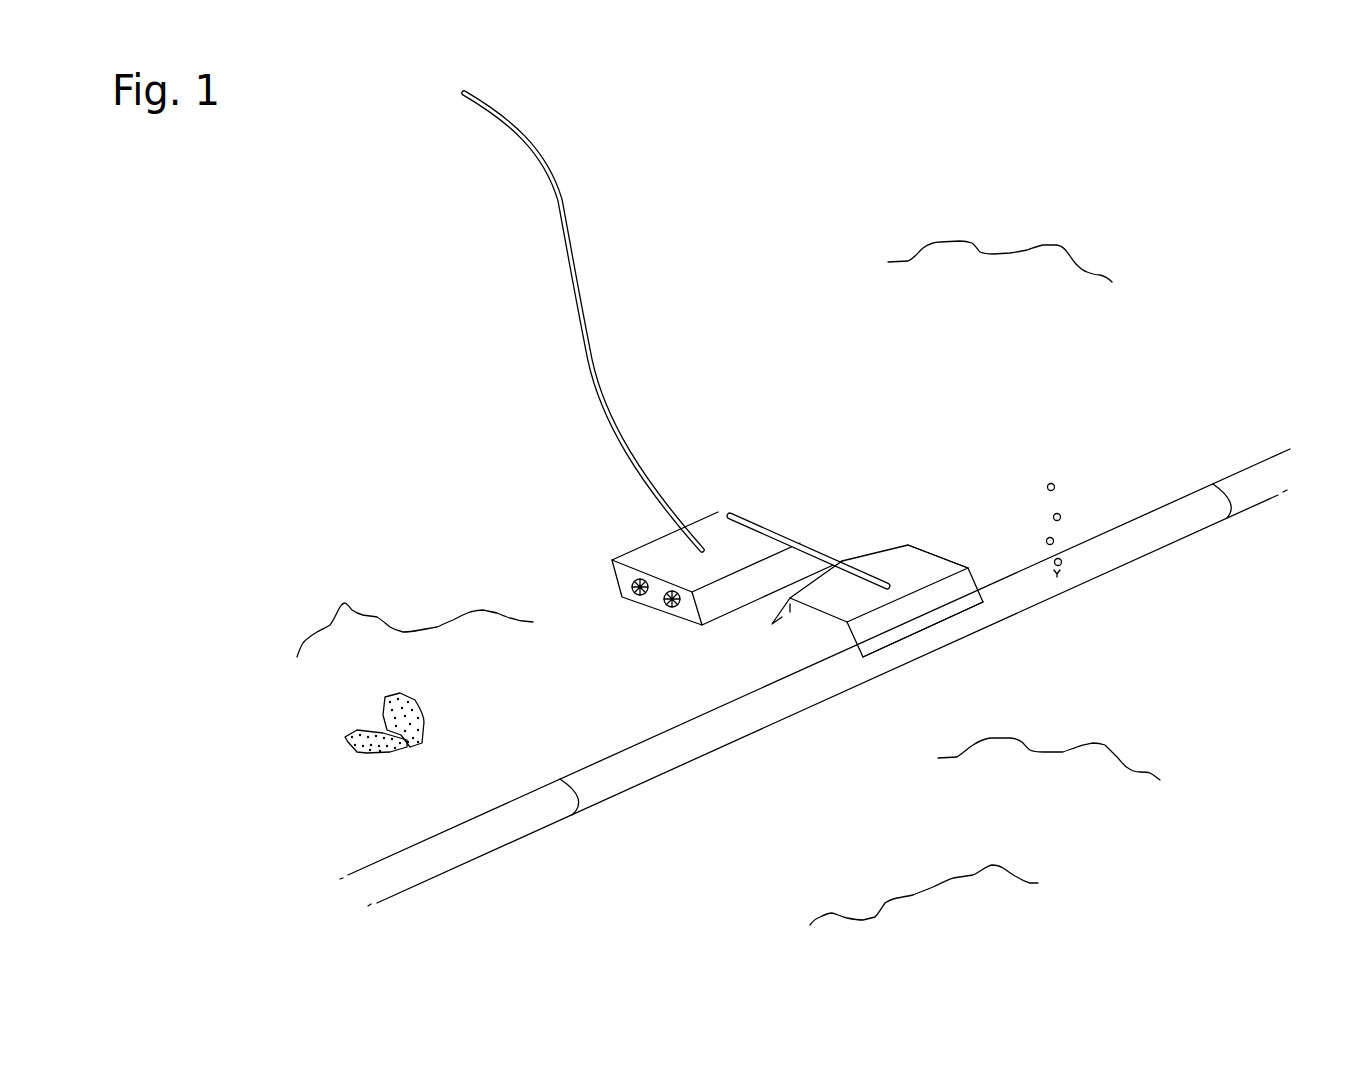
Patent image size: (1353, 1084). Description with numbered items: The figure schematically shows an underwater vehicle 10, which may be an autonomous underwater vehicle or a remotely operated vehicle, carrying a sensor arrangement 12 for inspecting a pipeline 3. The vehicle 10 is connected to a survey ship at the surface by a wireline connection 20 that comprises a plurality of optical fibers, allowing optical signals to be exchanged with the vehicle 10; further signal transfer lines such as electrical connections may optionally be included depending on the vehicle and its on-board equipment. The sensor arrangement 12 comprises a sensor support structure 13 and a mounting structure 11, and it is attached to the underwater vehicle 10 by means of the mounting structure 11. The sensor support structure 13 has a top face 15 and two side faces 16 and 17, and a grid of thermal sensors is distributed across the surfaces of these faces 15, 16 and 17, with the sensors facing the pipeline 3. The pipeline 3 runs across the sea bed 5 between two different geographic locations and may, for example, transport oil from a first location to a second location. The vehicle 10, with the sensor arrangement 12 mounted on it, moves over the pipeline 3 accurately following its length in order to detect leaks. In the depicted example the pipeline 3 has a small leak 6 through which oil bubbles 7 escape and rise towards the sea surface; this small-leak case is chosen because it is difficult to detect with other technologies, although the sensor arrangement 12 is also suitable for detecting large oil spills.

The pipeline 3 is at (1252, 478).
The sea bed 5 is at (864, 891).
The leak 6 is at (1057, 575).
The oil bubbles 7 is at (1063, 510).
The underwater vehicle 10 is at (736, 531).
The mounting structure 11 is at (852, 565).
The sensor arrangement 12 is at (908, 572).
The sensor support structure 13 is at (887, 543).
The top face 15 is at (942, 568).
The side face 16 is at (955, 602).
The side face 17 is at (790, 610).
The wireline connection 20 is at (562, 207).